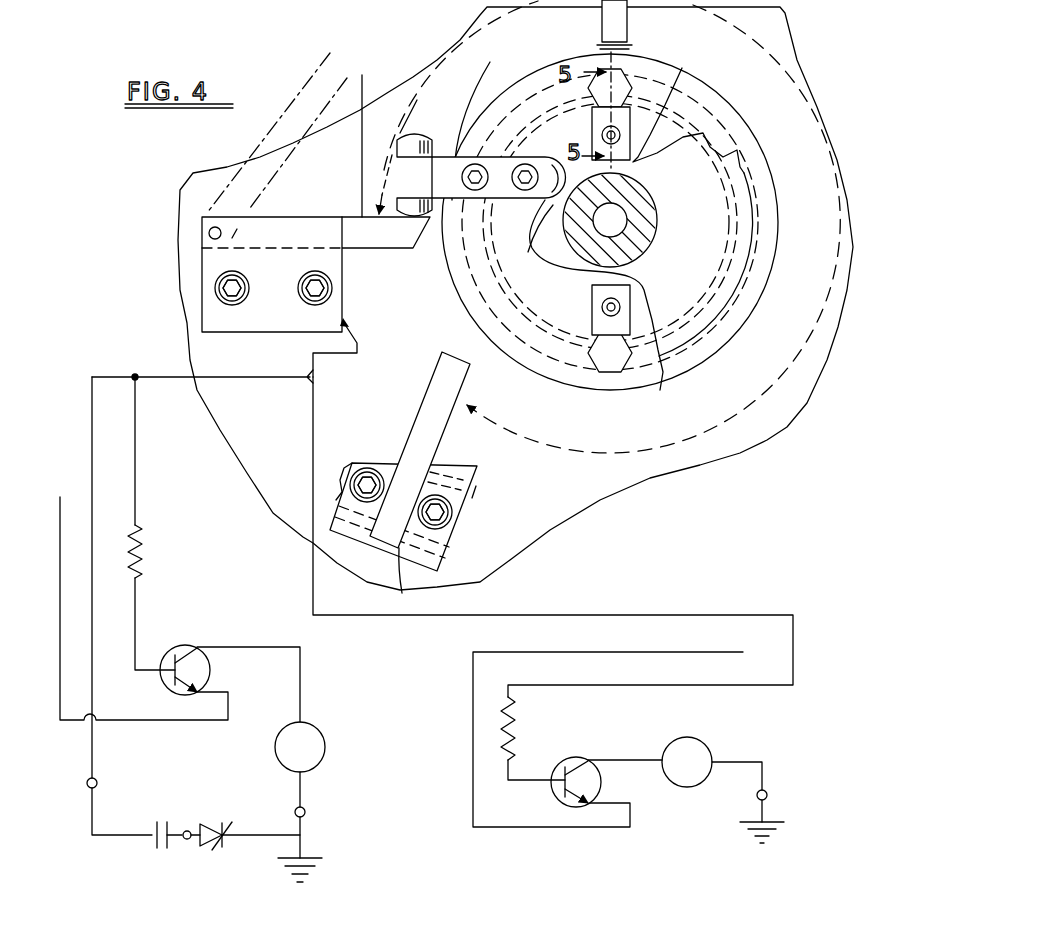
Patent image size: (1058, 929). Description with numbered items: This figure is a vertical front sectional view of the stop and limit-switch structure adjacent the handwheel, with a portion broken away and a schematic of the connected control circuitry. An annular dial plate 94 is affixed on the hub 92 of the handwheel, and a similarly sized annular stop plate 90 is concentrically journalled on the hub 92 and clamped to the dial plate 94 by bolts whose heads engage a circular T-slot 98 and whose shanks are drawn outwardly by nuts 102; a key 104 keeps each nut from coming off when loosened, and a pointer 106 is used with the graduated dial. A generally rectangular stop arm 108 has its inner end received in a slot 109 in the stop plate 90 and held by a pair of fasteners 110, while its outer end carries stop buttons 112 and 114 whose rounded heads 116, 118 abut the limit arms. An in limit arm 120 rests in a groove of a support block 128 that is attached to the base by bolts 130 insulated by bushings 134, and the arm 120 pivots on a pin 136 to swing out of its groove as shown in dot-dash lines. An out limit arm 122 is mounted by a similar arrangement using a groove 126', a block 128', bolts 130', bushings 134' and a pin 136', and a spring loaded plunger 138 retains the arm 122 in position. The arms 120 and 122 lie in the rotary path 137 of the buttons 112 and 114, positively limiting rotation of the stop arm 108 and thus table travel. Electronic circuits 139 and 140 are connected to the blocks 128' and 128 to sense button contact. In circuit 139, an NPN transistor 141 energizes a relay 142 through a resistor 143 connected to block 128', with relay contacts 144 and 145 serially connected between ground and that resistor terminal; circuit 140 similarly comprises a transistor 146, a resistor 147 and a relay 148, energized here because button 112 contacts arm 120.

The stop plate 90 is at (657, 387).
The hub 92 is at (657, 213).
The dial plate 94 is at (757, 138).
The circular T-slot 98 is at (747, 250).
The nuts 102 is at (630, 70).
The key 104 is at (630, 150).
The pointer 106 is at (630, 24).
The stop arm 108 is at (490, 62).
The slot 109 is at (536, 243).
The fasteners 110 is at (484, 186).
The stop button 112 is at (433, 222).
The stop button 114 is at (436, 133).
The head 116 is at (407, 227).
The head 118 is at (430, 109).
The in limit arm 120 is at (302, 135).
The out limit arm 122 is at (436, 370).
The groove 126' is at (429, 581).
The support block 128 is at (227, 274).
The support block 128' is at (444, 513).
The bolts 130 is at (273, 319).
The bolts 130' is at (441, 462).
The insulating bushings 134 is at (273, 281).
The insulating bushings 134' is at (444, 474).
The pin 136 is at (176, 232).
The pin 136' is at (421, 534).
The rotary path 137 is at (725, 425).
The spring loaded plunger 138 is at (444, 473).
The electronic circuit 139 is at (416, 631).
The electronic circuit 140 is at (638, 744).
The NPN transistor 141 is at (196, 645).
The relay 142 is at (314, 724).
The resistor 143 is at (137, 539).
The relay contact 144 is at (150, 840).
The relay contact 145 is at (210, 846).
The transistor 146 is at (569, 760).
The resistor 147 is at (514, 714).
The relay 148 is at (671, 786).